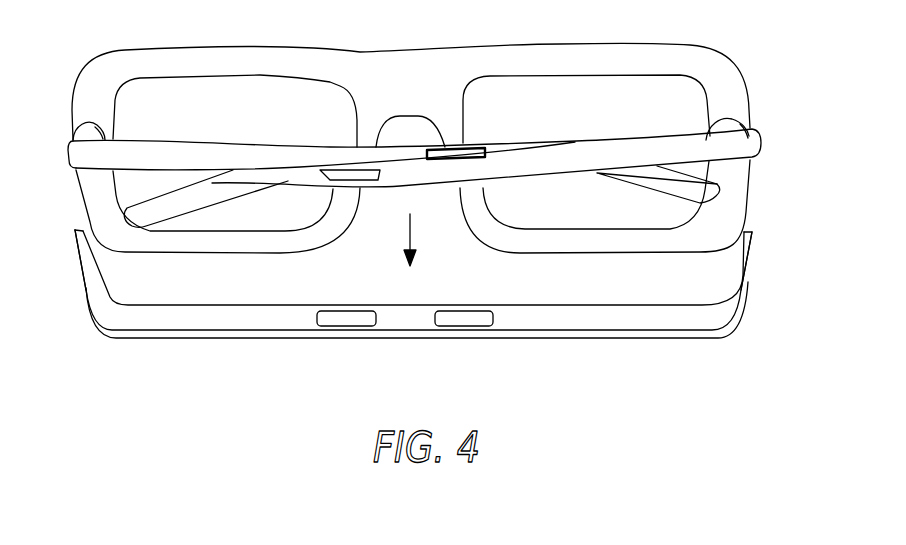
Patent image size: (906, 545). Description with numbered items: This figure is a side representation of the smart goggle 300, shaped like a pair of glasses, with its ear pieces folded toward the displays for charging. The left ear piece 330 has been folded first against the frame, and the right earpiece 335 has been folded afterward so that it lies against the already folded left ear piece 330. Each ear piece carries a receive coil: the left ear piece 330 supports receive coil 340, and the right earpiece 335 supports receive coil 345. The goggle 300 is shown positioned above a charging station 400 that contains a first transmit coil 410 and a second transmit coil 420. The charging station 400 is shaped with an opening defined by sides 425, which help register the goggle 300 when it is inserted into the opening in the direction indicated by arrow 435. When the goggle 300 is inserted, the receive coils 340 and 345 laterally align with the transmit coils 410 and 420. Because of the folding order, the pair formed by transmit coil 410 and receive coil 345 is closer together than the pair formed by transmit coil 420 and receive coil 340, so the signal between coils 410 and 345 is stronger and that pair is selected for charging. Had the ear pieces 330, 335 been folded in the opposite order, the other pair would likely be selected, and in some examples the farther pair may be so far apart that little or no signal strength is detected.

The smart goggle 300 is at (677, 47).
The left ear piece 330 is at (97, 170).
The right earpiece 335 is at (517, 178).
The receive coil 340 is at (450, 150).
The receive coil 345 is at (330, 186).
The charging station 400 is at (380, 338).
The first transmit coil 410 is at (346, 321).
The second transmit coil 420 is at (460, 321).
The sides 425 is at (77, 254).
The arrow 435 is at (412, 237).